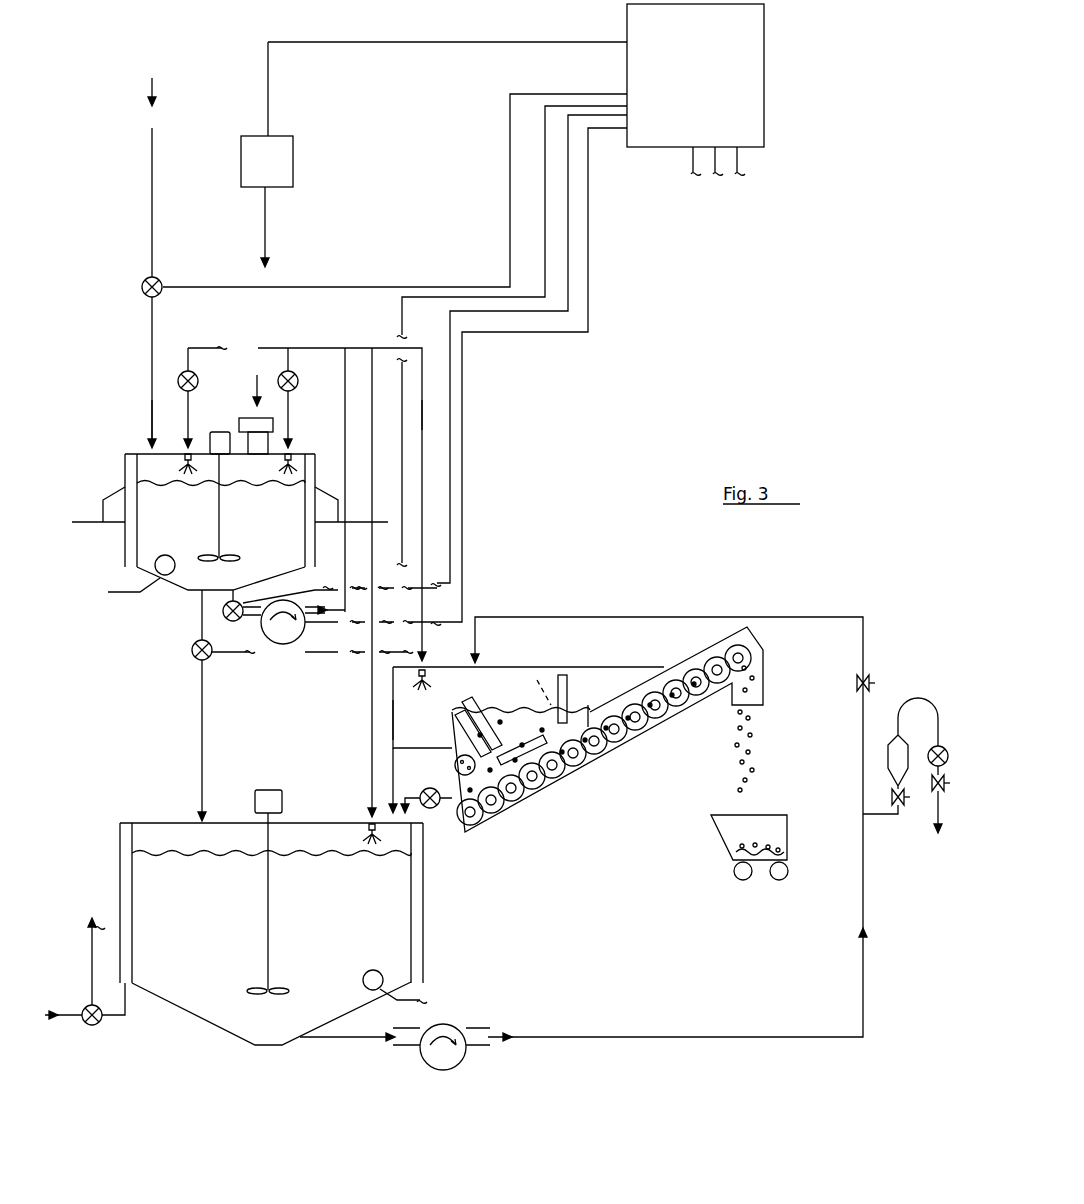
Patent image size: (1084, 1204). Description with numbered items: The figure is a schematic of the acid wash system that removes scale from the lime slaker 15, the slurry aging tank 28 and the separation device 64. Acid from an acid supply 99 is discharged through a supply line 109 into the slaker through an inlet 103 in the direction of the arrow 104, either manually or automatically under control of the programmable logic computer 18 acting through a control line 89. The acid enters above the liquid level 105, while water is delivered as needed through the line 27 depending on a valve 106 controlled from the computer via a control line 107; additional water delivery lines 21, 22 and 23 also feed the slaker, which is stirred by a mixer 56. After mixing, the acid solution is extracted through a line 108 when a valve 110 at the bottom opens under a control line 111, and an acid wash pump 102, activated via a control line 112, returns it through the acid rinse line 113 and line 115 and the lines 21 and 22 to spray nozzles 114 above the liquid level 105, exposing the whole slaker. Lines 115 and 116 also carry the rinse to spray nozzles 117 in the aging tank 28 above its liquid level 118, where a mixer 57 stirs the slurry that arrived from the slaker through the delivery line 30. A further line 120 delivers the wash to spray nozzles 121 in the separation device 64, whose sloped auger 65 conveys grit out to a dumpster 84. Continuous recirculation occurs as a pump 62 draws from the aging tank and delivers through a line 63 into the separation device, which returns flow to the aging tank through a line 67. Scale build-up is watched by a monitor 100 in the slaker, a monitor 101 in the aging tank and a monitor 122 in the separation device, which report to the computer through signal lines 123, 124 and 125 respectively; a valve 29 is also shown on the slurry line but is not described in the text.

The control line 89 is at (470, 42).
The programmable logic computer 18 is at (764, 90).
The acid supply 99 is at (293, 152).
The line 27 is at (152, 222).
The supply line 109 is at (265, 228).
The valve 106 is at (163, 283).
The control line 107 is at (288, 287).
The inlet 103 is at (265, 418).
The line 115 is at (332, 348).
The arrow 104 is at (257, 375).
The water delivery line 22 is at (190, 411).
The water delivery line 21 is at (290, 411).
The lime slaker 15 is at (301, 452).
The water delivery line 23 is at (152, 410).
The spray nozzles 114 is at (190, 476).
The liquid level 105 is at (248, 478).
The line 120 is at (422, 417).
The acid rinse line 113 is at (345, 472).
The line 116 is at (372, 512).
The control line 111 is at (450, 556).
The control line 112 is at (462, 603).
The mixer 56 is at (228, 556).
The line 108 is at (243, 590).
The signal line 123 is at (740, 162).
The monitor 100 is at (175, 575).
The valve 110 is at (223, 611).
The valve 29 is at (192, 652).
The acid wash pump 102 is at (283, 644).
The delivery line 30 is at (202, 730).
The slurry aging tank 28 is at (238, 823).
The line 67 is at (392, 757).
The spray nozzles 117 is at (368, 822).
The liquid level 118 is at (208, 853).
The separation device 64 is at (508, 668).
The spray nozzles 121 is at (432, 675).
The signal line 125 is at (704, 172).
The sloped auger 65 is at (600, 765).
The dumpster 84 is at (768, 815).
The monitor 122 is at (450, 800).
The mixer 57 is at (280, 990).
The monitor 101 is at (385, 975).
The signal line 124 is at (706, 178).
The pump 62 is at (458, 1030).
The line 63 is at (785, 1037).